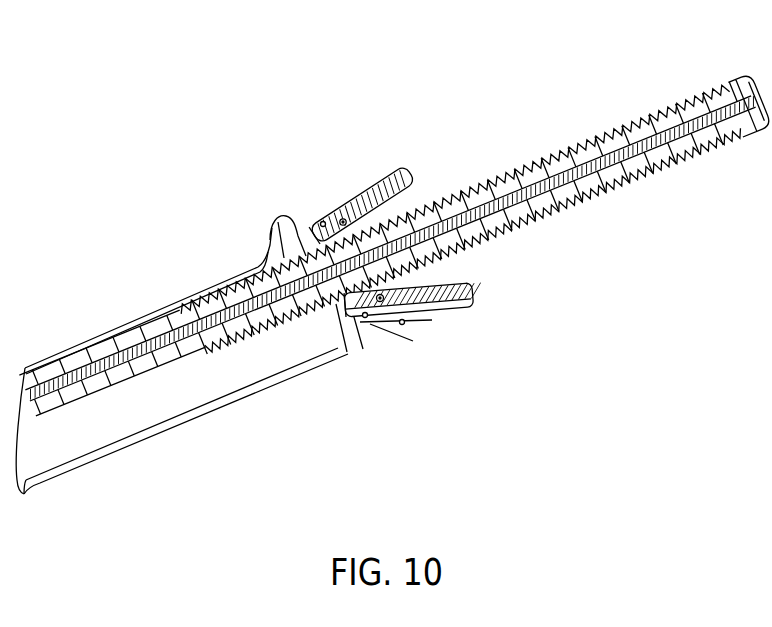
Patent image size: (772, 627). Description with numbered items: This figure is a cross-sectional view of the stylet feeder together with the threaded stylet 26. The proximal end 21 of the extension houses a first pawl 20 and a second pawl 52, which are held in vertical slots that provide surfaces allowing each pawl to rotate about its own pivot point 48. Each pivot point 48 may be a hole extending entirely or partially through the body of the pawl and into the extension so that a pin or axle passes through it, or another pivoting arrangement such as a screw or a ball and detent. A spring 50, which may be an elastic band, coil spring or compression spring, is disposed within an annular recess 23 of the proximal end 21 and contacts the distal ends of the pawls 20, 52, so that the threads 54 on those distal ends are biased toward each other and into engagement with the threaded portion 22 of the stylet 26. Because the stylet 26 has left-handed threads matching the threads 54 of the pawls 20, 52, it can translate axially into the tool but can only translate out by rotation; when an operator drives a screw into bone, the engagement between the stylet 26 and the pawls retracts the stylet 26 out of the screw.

The first pawl 20 is at (399, 172).
The proximal end 21 is at (484, 405).
The threaded portion 22 is at (386, 218).
The annular recess 23 is at (377, 352).
The threaded stylet 26 is at (724, 86).
The pivot point 48 is at (344, 219).
The spring 50 is at (323, 221).
The second pawl 52 is at (455, 307).
The threads 54 is at (290, 223).